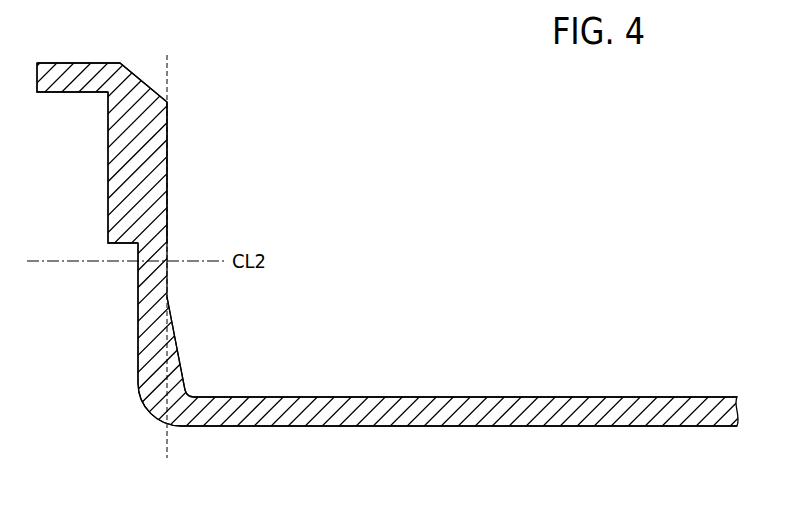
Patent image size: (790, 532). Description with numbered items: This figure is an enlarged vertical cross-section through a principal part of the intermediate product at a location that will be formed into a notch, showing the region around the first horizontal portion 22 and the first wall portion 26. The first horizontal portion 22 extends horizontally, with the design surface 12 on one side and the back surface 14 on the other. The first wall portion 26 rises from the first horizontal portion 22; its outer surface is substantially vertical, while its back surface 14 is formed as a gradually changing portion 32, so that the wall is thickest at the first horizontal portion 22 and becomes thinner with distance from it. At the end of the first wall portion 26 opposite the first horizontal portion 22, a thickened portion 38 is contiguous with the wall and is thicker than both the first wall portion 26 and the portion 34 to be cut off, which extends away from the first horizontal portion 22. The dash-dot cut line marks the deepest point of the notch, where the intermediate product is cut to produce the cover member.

The design surface 12 is at (517, 428).
The back surface 14 is at (591, 397).
The first horizontal portion 22 is at (327, 397).
The first wall portion 26 is at (153, 366).
The gradually changing portion 32 is at (173, 360).
The portion to be cut off 34 is at (62, 77).
The thickened portion 38 is at (120, 138).